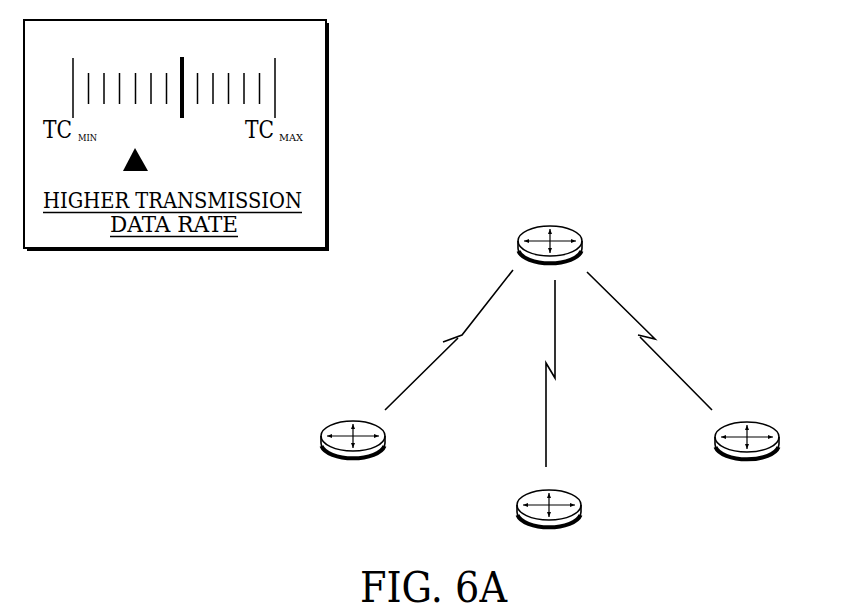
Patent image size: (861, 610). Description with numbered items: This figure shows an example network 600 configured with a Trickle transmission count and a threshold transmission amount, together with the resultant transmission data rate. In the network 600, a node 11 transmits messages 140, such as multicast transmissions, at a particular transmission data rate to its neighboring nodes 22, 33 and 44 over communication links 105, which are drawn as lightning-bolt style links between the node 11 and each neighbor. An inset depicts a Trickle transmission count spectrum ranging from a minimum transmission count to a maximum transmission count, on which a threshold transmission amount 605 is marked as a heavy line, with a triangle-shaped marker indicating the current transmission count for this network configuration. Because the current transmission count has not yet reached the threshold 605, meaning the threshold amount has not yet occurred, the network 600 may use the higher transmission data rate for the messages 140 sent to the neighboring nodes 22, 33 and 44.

The network 600 is at (747, 78).
The threshold transmission amount 605 is at (189, 62).
The node 11 is at (550, 223).
The neighboring node 22 is at (353, 461).
The neighboring node 33 is at (549, 529).
The neighboring node 44 is at (747, 461).
The communication links 105 is at (548, 362).
The messages 140 is at (359, 336).